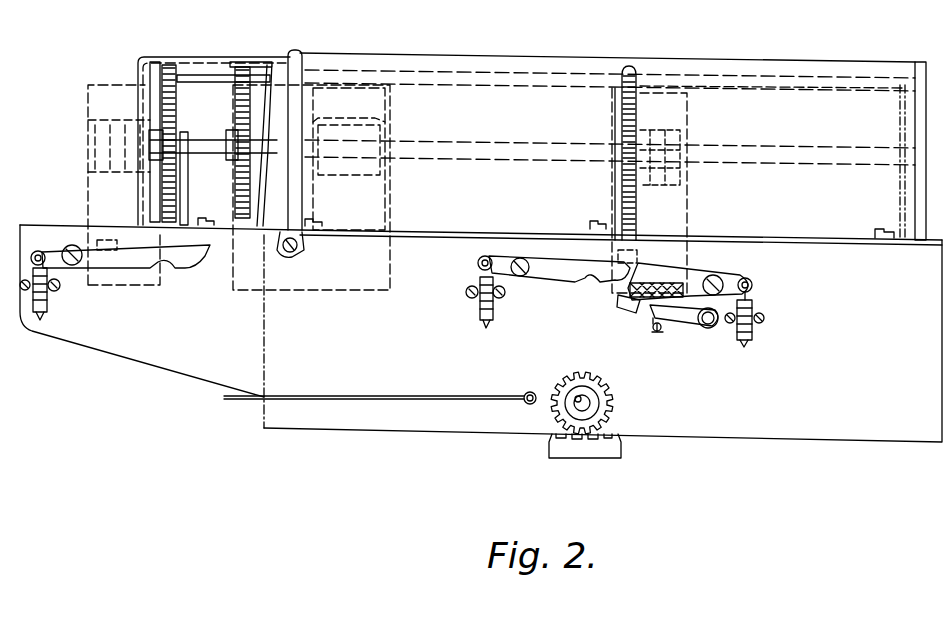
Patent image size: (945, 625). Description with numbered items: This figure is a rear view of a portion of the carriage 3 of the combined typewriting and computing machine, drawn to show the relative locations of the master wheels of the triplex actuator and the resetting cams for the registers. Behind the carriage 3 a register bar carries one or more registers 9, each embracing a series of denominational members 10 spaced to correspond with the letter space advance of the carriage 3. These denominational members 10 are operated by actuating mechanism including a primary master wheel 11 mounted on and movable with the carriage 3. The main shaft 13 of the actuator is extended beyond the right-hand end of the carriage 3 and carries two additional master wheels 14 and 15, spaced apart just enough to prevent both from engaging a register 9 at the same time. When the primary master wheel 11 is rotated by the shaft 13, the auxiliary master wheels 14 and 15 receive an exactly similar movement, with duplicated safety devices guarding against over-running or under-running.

The carriage 3 is at (295, 420).
The register 9 is at (616, 265).
The denominational member 10 is at (96, 137).
The master wheel 11 is at (620, 196).
The main shaft 13 is at (474, 147).
The auxiliary master wheel 14 is at (251, 64).
The auxiliary master wheel 15 is at (176, 63).